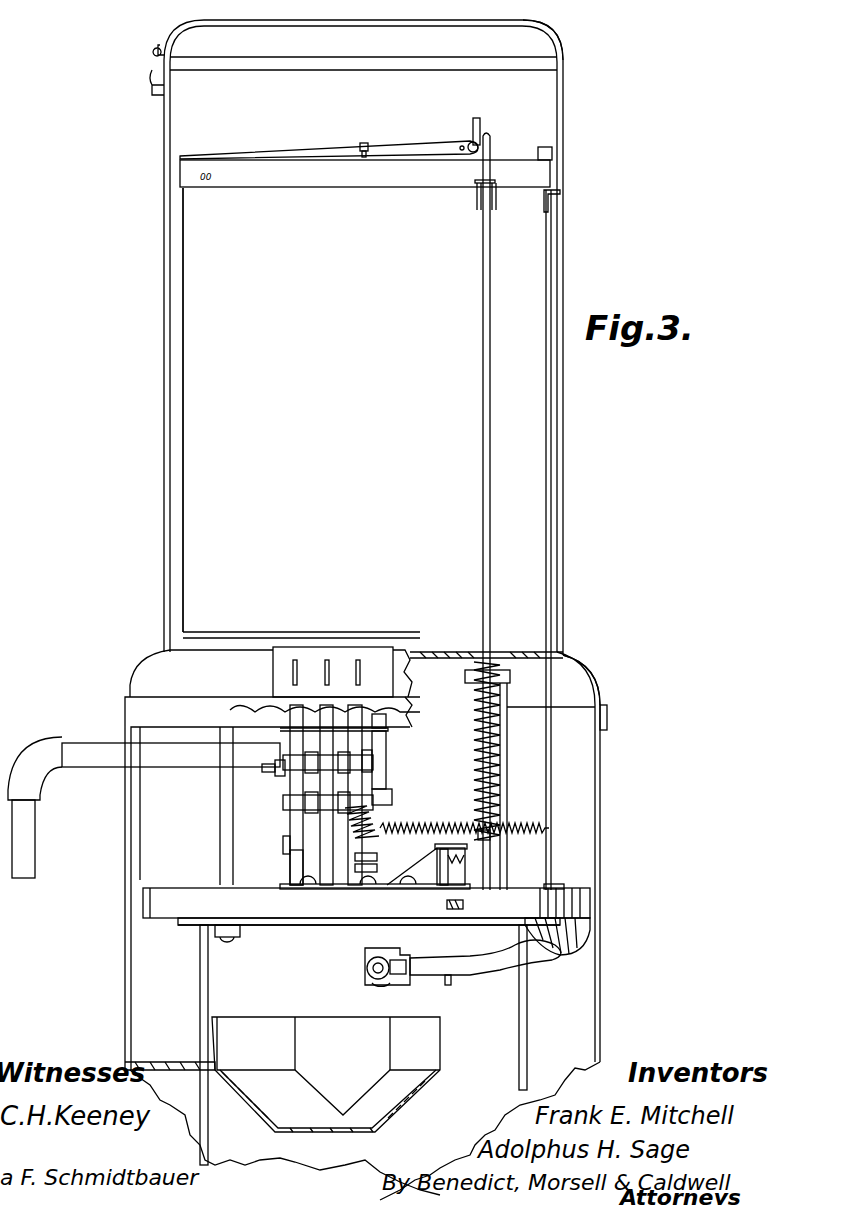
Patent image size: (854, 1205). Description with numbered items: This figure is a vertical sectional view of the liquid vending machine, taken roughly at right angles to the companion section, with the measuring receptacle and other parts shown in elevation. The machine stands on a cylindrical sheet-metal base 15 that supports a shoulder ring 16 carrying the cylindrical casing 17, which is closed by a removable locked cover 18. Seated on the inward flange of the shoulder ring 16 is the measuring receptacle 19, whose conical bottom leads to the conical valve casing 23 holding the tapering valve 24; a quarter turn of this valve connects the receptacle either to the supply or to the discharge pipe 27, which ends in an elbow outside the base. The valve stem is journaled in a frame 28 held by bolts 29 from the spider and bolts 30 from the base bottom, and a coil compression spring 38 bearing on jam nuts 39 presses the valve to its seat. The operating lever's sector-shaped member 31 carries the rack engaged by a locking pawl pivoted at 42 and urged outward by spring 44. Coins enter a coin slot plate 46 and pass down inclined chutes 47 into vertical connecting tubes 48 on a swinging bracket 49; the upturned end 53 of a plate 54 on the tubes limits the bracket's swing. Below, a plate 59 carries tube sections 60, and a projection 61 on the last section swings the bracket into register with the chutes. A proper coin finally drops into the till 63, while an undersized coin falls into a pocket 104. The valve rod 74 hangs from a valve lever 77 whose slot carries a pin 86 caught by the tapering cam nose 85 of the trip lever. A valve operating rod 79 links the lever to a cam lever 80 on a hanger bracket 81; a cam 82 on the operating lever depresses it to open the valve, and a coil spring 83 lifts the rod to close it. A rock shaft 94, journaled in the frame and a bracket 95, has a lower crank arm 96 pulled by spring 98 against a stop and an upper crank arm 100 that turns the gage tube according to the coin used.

The base 15 is at (125, 945).
The shoulder ring 16 is at (590, 678).
The casing 17 is at (164, 404).
The removable locked cover 18 is at (552, 42).
The measuring tank or receptacle 19 is at (185, 293).
The conical valve casing 23 is at (378, 772).
The tapering valve 24 is at (392, 797).
The discharge pipe 27 is at (35, 838).
The frame 28 is at (283, 925).
The bolts 29 is at (220, 845).
The bolts 30 is at (203, 967).
The sector-shaped member 31 is at (338, 912).
The coil compression spring 38 is at (382, 818).
The jam nuts 39 is at (381, 865).
The pivot 42 is at (465, 855).
The spring 44 is at (428, 855).
The coin slot plate 46 is at (273, 675).
The inclined chutes 47 is at (345, 760).
The vertical connecting tubes 48 is at (362, 748).
The swinging bracket 49 is at (296, 786).
The upturned end 53 is at (386, 721).
The plate 54 is at (290, 730).
The plate 59 is at (285, 890).
The tube sections 60 is at (288, 870).
The projection 61 is at (283, 845).
The till or money receptacle 63 is at (156, 1062).
The valve rod 74 is at (362, 143).
The valve lever 77 is at (404, 150).
The valve operating rod 79 is at (483, 470).
The cam lever 80 is at (448, 975).
The hanger bracket 81 is at (365, 955).
The cam 82 is at (565, 950).
The coil spring 83 is at (476, 745).
The tapering cam nose 85 is at (470, 138).
The pin 86 is at (460, 152).
The rock shaft 94 is at (551, 778).
The bracket 95 is at (560, 196).
The crank arm 96 is at (560, 884).
The spring 98 is at (442, 823).
The crank arm 100 is at (538, 156).
The receptacle or pocket 104 is at (318, 1017).